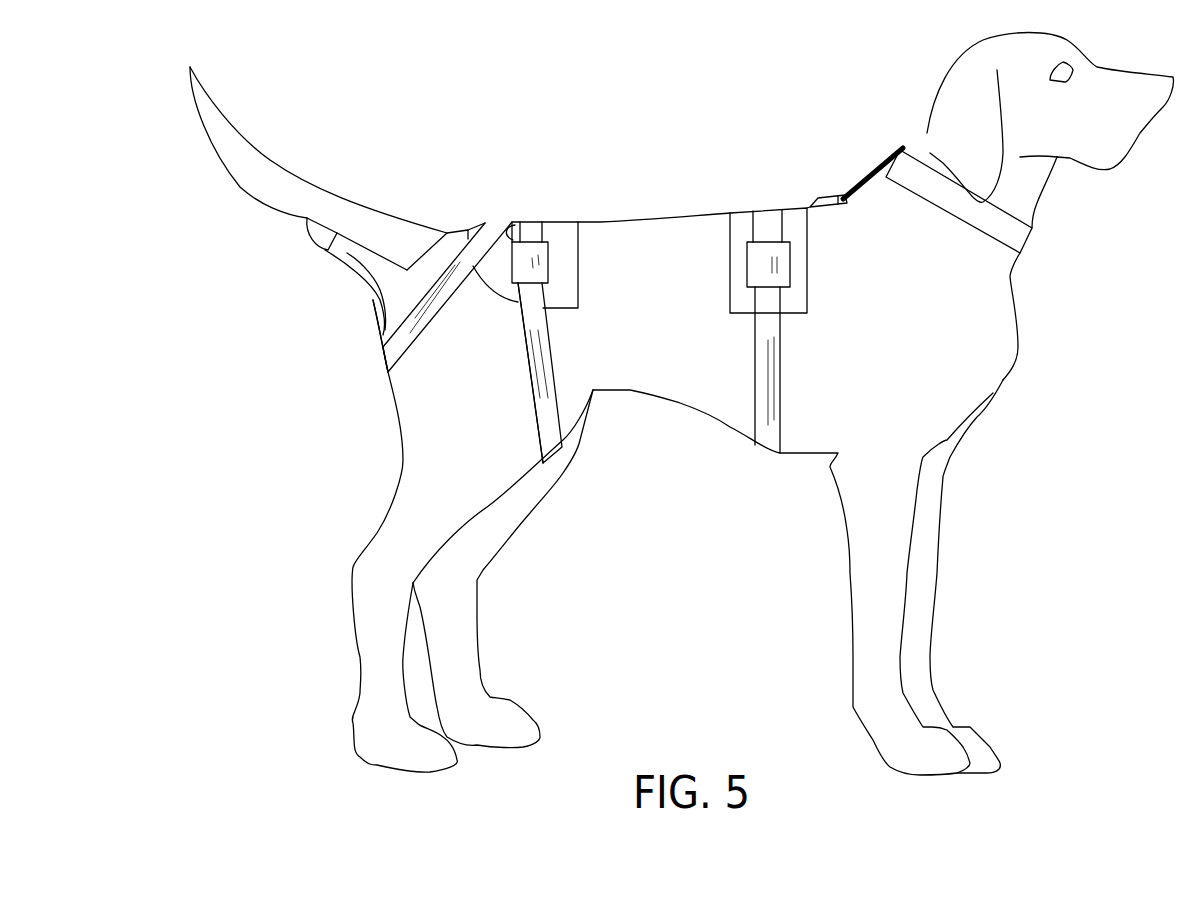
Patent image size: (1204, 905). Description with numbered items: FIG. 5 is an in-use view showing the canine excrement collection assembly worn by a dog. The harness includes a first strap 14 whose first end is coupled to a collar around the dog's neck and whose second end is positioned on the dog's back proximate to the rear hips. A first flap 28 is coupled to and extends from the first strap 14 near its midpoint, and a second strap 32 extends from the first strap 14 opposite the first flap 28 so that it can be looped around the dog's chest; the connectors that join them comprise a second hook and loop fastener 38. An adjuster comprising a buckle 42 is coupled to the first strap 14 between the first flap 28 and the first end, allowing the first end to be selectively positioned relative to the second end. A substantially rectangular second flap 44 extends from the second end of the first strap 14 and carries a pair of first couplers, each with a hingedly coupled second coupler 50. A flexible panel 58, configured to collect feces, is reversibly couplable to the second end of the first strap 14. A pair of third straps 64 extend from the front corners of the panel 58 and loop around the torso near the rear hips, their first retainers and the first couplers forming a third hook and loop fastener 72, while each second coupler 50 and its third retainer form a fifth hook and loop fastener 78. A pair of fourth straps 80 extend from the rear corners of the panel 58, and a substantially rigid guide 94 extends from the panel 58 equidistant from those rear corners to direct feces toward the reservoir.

The first strap 14 is at (876, 184).
The first flap 28 is at (745, 228).
The second strap 32 is at (763, 393).
The second hook and loop fastener 38 is at (768, 250).
The buckle 42 is at (838, 190).
The second flap 44 is at (495, 280).
The second couplers 50 is at (373, 300).
The panel 58 is at (343, 255).
The third straps 64 is at (547, 377).
The third hook and loop fastener 72 is at (544, 242).
The fifth hook and loop fastener 78 is at (520, 244).
The fourth straps 80 is at (438, 287).
The guide 94 is at (311, 237).